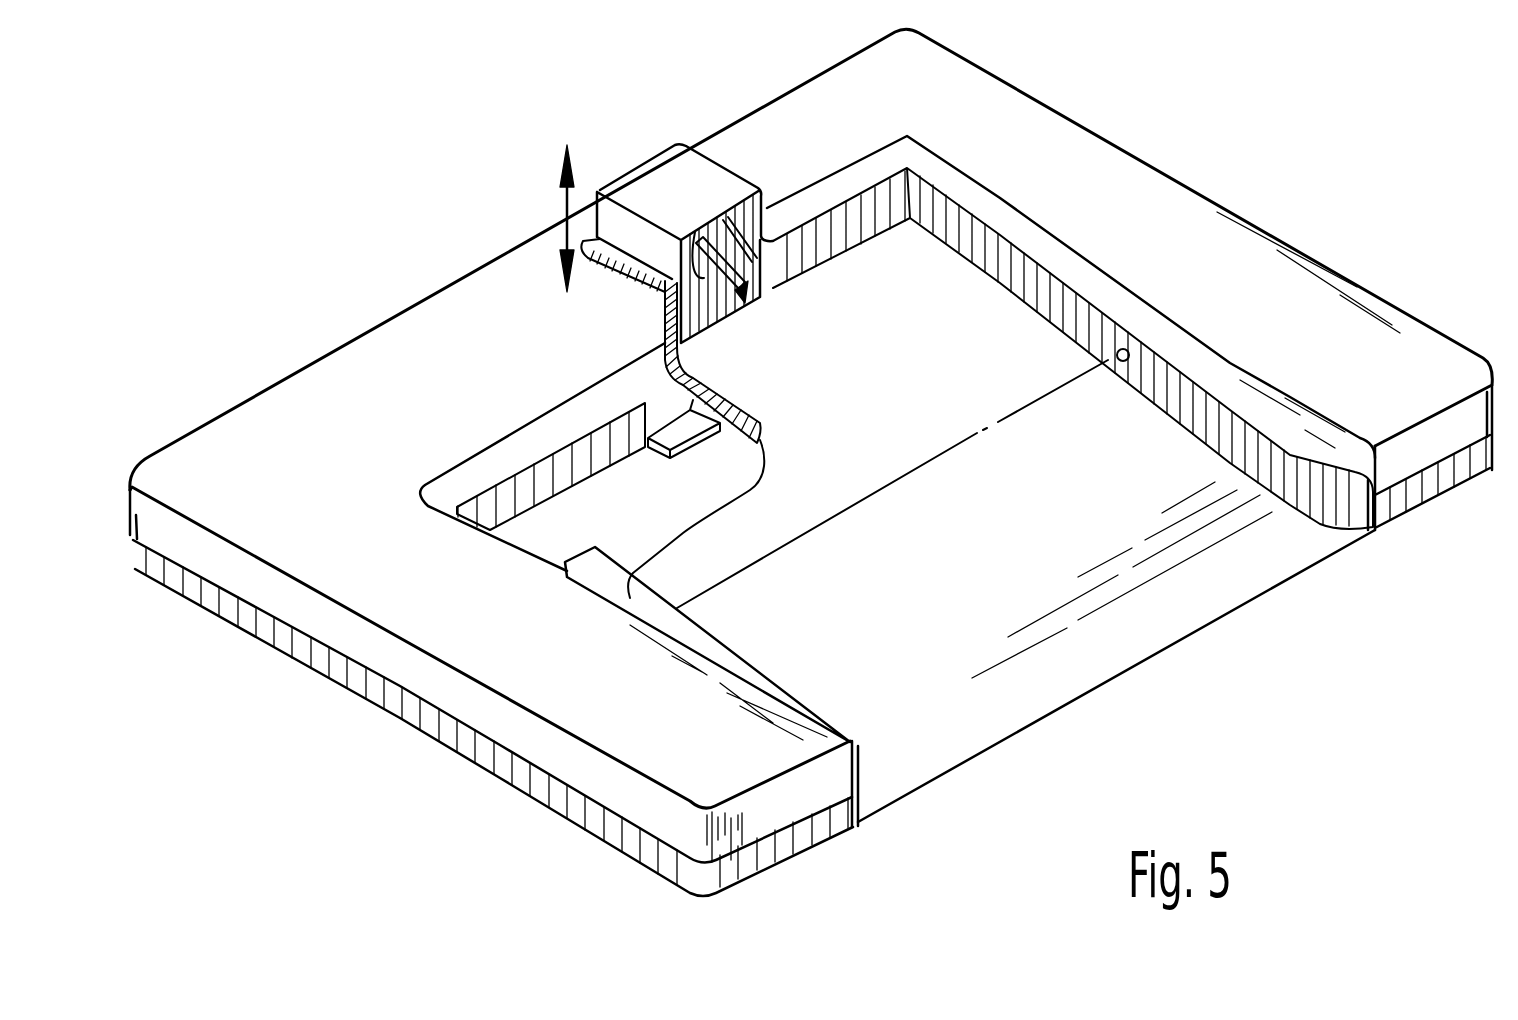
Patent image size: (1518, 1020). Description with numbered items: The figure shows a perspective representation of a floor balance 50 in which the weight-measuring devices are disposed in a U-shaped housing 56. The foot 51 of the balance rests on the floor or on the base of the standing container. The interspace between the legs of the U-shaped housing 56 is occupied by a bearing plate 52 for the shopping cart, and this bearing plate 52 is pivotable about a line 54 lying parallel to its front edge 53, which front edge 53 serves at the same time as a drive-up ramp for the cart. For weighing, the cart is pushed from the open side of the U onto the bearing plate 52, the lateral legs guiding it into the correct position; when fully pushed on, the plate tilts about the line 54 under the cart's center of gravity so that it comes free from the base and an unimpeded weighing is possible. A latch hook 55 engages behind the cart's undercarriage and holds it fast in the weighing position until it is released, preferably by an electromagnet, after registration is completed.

The balance 50 is at (1103, 132).
The foot 51 is at (580, 826).
The bearing plate 52 is at (1102, 580).
The front edge 53 is at (1140, 668).
The line 54 is at (919, 466).
The latch hook 55 is at (689, 242).
The U-shaped housing 56 is at (396, 312).